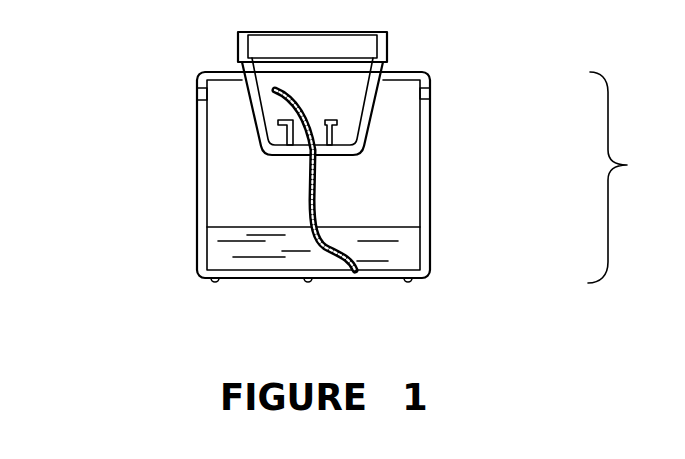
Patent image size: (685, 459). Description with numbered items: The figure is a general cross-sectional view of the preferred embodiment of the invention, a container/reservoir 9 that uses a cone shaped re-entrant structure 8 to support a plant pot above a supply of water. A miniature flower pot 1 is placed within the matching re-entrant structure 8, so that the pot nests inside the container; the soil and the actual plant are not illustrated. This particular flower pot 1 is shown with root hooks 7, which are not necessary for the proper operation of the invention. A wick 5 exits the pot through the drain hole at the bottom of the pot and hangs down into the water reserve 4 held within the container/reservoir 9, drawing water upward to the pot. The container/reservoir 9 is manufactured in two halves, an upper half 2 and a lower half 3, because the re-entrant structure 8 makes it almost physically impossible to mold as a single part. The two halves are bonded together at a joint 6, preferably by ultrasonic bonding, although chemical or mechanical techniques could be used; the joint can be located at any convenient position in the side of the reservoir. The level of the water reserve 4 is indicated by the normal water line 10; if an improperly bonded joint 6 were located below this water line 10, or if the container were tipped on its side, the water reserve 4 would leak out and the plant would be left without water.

The miniature flower pot 1 is at (390, 45).
The upper half 2 is at (427, 92).
The lower half 3 is at (431, 178).
The water reserve 4 is at (397, 257).
The wick 5 is at (308, 185).
The joint 6 is at (198, 98).
The root hooks 7 is at (334, 134).
The re-entrant structure 8 is at (340, 138).
The container/reservoir 9 is at (619, 177).
The normal water line 10 is at (250, 227).